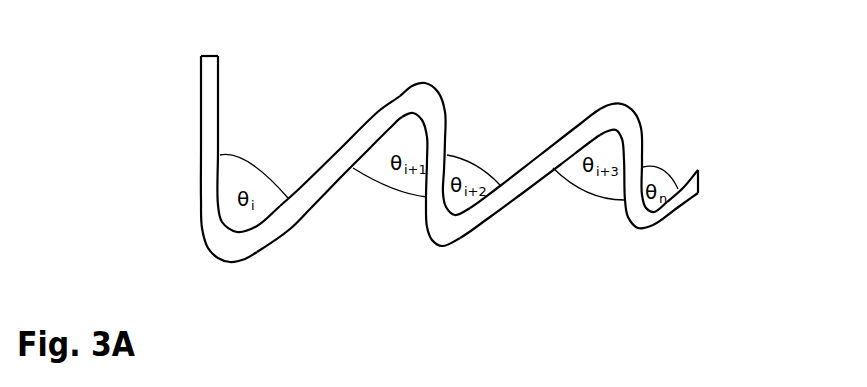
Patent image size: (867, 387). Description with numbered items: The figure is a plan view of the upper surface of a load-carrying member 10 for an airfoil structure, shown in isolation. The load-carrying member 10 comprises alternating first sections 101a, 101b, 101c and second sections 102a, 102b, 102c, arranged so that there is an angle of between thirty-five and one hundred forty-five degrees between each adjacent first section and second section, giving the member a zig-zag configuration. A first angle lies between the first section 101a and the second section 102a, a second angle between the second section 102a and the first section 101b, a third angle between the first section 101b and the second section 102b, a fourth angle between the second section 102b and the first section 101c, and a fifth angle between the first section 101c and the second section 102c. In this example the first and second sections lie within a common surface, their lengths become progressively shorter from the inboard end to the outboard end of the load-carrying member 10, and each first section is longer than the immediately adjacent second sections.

The load-carrying member 10 is at (140, 130).
The first section 101a is at (208, 138).
The first section 101b is at (438, 140).
The first section 101c is at (630, 160).
The second section 102a is at (323, 182).
The second section 102b is at (522, 182).
The second section 102c is at (678, 197).